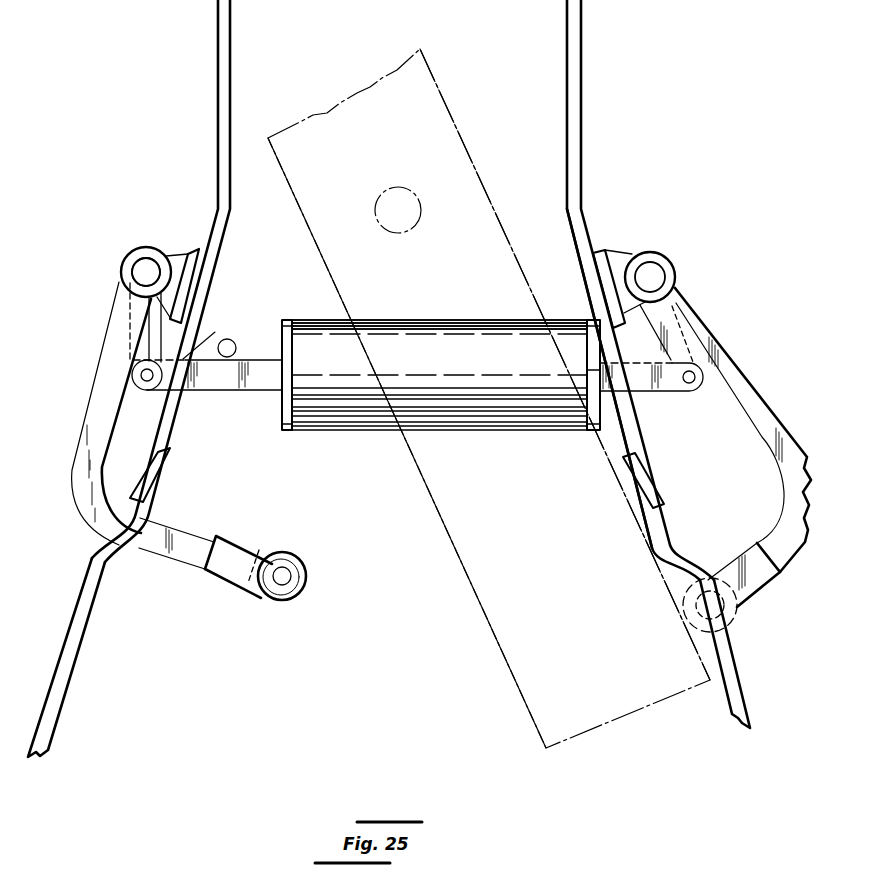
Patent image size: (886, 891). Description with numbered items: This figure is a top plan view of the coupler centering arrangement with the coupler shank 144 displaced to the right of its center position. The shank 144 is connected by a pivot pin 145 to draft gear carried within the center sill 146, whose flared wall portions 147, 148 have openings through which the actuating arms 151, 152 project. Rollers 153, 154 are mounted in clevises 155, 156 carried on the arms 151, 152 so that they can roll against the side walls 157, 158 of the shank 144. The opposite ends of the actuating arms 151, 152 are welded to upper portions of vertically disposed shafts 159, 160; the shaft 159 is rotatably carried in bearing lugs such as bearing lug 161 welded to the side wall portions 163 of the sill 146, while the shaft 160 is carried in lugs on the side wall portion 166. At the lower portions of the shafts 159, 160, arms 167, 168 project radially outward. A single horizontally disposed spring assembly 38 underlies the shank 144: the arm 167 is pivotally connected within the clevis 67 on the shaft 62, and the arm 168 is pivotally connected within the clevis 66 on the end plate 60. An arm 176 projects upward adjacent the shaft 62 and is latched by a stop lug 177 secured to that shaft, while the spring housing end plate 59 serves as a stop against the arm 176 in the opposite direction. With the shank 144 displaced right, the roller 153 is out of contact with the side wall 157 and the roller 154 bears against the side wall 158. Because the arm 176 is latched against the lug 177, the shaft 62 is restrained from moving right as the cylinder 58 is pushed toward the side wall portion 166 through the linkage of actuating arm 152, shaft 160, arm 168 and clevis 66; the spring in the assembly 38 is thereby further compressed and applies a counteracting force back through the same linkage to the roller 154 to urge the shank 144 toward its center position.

The spring assembly 38 is at (339, 434).
The cylinder 58 is at (322, 332).
The spring housing end plate 59 is at (283, 431).
The end plate 60 is at (598, 433).
The shaft 62 is at (226, 378).
The clevis 66 is at (648, 398).
The clevis 67 is at (153, 393).
The coupler shank 144 is at (461, 122).
The pivot pin 145 is at (398, 214).
The center sill 146 is at (585, 62).
The flared wall portion 147 is at (68, 654).
The flared wall portion 148 is at (723, 660).
The actuating arm 151 is at (73, 434).
The actuating arm 152 is at (743, 365).
The roller 153 is at (273, 601).
The roller 154 is at (684, 607).
The clevis 155 is at (244, 558).
The clevis 156 is at (735, 578).
The side wall 157 is at (453, 552).
The side wall 158 is at (508, 230).
The shaft 159 is at (143, 271).
The shaft 160 is at (653, 276).
The bearing lug 161 is at (147, 248).
The side wall portion 163 is at (219, 238).
The side wall portion 166 is at (571, 236).
The arm 167 is at (152, 326).
The arm 168 is at (673, 346).
The arm 176 is at (232, 348).
The stop lug 177 is at (202, 344).